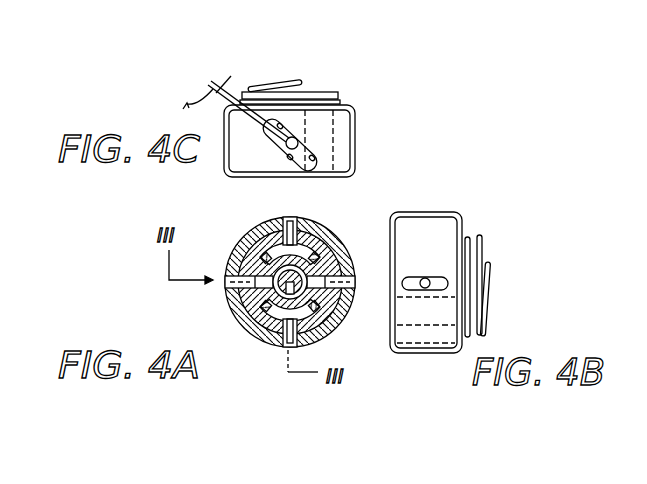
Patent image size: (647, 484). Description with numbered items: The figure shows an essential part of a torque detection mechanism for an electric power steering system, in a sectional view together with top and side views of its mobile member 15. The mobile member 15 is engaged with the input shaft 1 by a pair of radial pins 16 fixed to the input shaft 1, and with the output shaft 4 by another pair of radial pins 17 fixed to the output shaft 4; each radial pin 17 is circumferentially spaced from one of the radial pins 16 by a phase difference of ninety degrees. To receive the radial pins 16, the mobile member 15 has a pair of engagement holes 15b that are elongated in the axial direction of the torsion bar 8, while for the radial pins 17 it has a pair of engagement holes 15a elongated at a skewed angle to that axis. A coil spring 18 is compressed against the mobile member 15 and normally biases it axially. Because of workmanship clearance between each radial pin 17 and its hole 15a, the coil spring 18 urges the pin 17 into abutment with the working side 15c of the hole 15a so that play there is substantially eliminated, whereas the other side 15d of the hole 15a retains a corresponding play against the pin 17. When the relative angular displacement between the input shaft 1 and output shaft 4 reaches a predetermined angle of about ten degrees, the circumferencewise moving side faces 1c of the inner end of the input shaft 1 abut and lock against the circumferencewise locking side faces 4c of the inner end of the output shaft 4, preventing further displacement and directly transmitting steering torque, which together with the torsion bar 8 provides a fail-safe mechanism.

In FIG. 4A, the input shaft 1 is at (245, 302).
In FIG. 4A, the circumferencewise moving side faces 1c is at (247, 263).
In FIG. 4A, the output shaft 4 is at (316, 222).
In FIG. 4A, the circumferencewise locking side faces 4c is at (250, 248).
In FIG. 4A, the torsion bar 8 is at (306, 292).
In FIG. 4C, the mobile member 15 is at (341, 138).
In FIG. 4A, the mobile member 15 is at (238, 255).
In FIG. 4B, the mobile member 15 is at (437, 232).
In FIG. 4C, the engagement holes 15a is at (318, 154).
In FIG. 4B, the engagement holes 15b is at (447, 284).
In FIG. 4C, the working side 15c is at (281, 126).
In FIG. 4C, the other side 15d is at (288, 155).
In FIG. 4A, the radial pins 16 is at (228, 275).
In FIG. 4B, the radial pins 16 is at (424, 279).
In FIG. 4C, the radial pins 17 is at (294, 142).
In FIG. 4A, the radial pins 17 is at (292, 220).
In FIG. 4C, the coil spring 18 is at (273, 87).
In FIG. 4B, the coil spring 18 is at (482, 248).